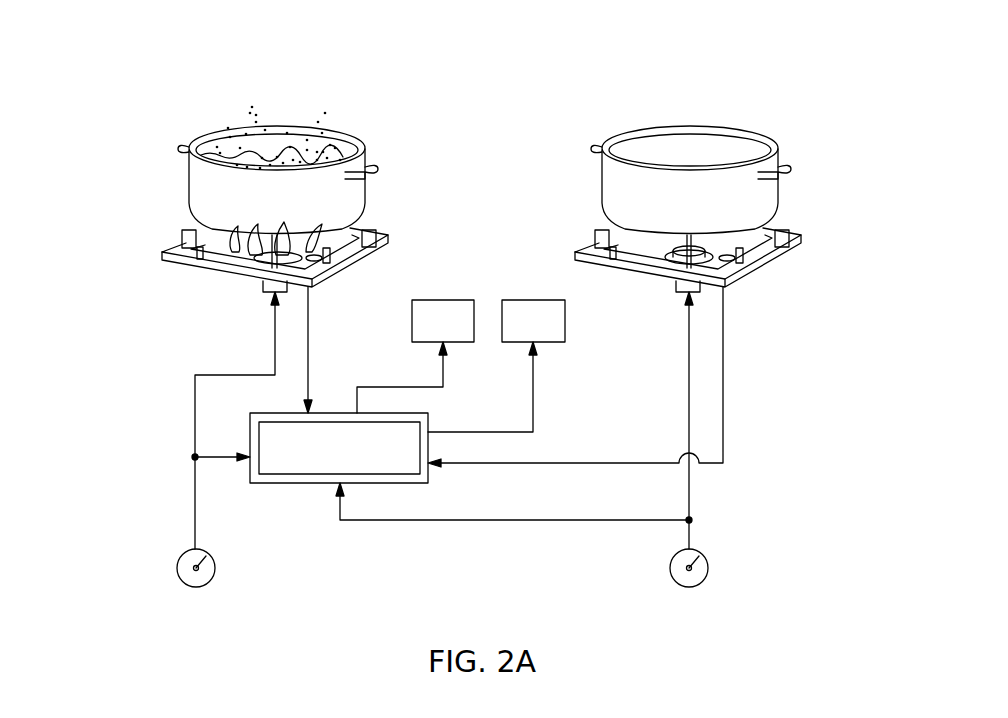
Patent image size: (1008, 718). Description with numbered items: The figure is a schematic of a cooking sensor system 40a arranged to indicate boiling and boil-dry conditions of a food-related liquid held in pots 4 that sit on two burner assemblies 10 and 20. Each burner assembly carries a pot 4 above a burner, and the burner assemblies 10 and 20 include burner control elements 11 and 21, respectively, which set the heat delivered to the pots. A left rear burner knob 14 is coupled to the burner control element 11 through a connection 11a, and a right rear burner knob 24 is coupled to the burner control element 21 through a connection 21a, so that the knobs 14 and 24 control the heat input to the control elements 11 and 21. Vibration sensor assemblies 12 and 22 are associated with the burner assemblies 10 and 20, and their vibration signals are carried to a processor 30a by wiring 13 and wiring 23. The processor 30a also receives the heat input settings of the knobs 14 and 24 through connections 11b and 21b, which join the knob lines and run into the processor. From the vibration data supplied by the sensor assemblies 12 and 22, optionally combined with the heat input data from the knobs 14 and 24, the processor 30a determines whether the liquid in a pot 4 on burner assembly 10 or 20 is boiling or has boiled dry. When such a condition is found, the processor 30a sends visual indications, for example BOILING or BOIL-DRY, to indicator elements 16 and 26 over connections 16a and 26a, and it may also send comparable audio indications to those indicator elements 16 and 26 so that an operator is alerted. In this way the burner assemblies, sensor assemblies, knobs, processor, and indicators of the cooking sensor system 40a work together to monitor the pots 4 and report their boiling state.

The pot 4 is at (340, 128).
The burner assembly 10 is at (180, 222).
The burner control element 11 is at (243, 257).
The connection 11a is at (172, 420).
The connection 11b is at (210, 458).
The vibration sensor assembly 12 is at (335, 253).
The wiring 13 is at (308, 325).
The left rear burner knob 14 is at (176, 560).
The indicator element 16 is at (454, 333).
The connection 16a is at (443, 372).
The burner assembly 20 is at (595, 222).
The burner control element 21 is at (656, 257).
The connection 21a is at (688, 360).
The connection 21b is at (567, 520).
The vibration sensor assembly 22 is at (748, 253).
The wiring 23 is at (723, 390).
The right rear burner knob 24 is at (670, 560).
The indicator element 26 is at (544, 333).
The connection 26a is at (533, 392).
The processor 30a is at (357, 461).
The cooking sensor system 40a is at (752, 42).